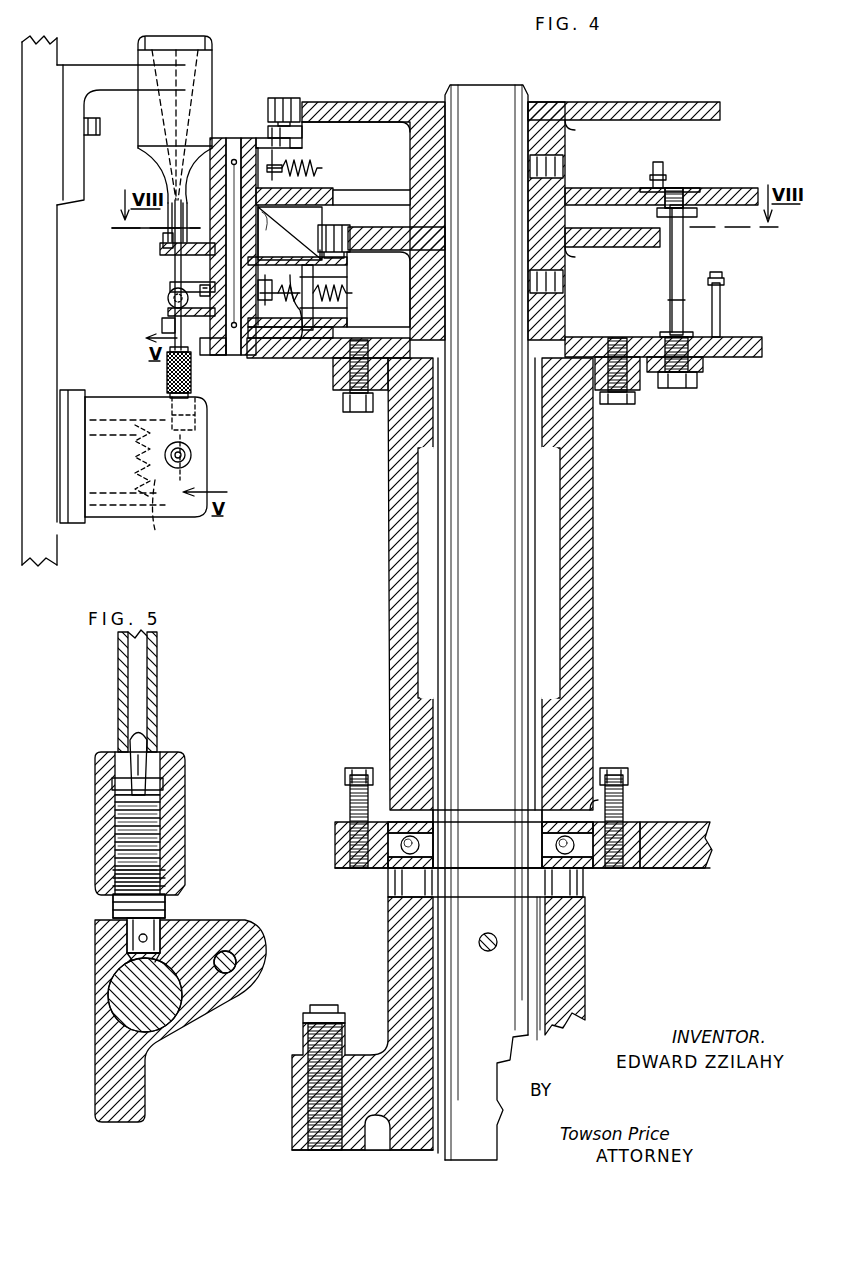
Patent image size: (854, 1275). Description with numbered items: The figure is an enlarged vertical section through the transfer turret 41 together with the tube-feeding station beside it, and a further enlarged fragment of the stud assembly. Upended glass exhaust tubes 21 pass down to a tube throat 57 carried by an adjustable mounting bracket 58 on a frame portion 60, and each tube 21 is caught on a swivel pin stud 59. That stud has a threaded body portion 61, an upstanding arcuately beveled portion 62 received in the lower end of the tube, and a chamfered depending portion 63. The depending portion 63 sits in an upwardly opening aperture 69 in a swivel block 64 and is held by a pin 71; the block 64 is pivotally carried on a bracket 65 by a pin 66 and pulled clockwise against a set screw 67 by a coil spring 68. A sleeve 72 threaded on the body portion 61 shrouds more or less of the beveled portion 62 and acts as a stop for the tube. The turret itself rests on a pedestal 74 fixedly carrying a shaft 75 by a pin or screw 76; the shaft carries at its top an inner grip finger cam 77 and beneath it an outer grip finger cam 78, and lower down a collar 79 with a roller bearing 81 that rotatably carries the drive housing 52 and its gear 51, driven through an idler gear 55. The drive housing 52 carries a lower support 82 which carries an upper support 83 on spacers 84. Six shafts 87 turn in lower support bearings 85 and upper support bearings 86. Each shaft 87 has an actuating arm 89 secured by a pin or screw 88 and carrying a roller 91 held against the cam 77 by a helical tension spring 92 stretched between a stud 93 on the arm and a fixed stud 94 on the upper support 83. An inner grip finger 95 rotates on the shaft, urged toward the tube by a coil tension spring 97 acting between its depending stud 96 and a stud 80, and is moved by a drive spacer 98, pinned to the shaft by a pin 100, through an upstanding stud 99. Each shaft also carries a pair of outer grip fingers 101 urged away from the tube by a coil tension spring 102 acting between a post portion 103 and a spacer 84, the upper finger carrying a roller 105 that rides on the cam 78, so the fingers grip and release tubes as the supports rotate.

In FIG. 4, the exhaust tube 21 is at (174, 270).
In FIG. 5, the exhaust tube 21 is at (158, 692).
In FIG. 4, the transfer turret 41 is at (360, 85).
In FIG. 4, the gear 51 is at (335, 835).
In FIG. 4, the drive housing 52 is at (595, 668).
In FIG. 4, the idler gear 55 is at (672, 822).
In FIG. 4, the tube throat 57 is at (152, 128).
In FIG. 4, the adjustable mounting bracket 58 is at (93, 72).
In FIG. 5, the swivel pin stud 59 is at (178, 775).
In FIG. 4, the frame portion 60 is at (52, 292).
In FIG. 5, the threaded body portion 61 is at (178, 892).
In FIG. 5, the arcuately beveled portion 62 is at (128, 745).
In FIG. 5, the depending portion 63 is at (172, 918).
In FIG. 4, the swivel block 64 is at (210, 409).
In FIG. 5, the swivel block 64 is at (147, 1090).
In FIG. 4, the bracket 65 is at (104, 523).
In FIG. 4, the pin 66 is at (205, 430).
In FIG. 5, the pin 66 is at (122, 995).
In FIG. 4, the set screw 67 is at (190, 462).
In FIG. 4, the coil spring 68 is at (156, 525).
In FIG. 5, the upwardly opening aperture 69 is at (130, 958).
In FIG. 5, the pin 71 is at (139, 935).
In FIG. 4, the sleeve 72 is at (165, 372).
In FIG. 5, the sleeve 72 is at (185, 850).
In FIG. 4, the pedestal 74 is at (590, 985).
In FIG. 4, the shaft 75 is at (565, 960).
In FIG. 4, the pin or screw 76 is at (483, 932).
In FIG. 4, the inner grip finger cam 77 is at (646, 102).
In FIG. 4, the outer grip finger cam 78 is at (608, 250).
In FIG. 4, the collar 79 is at (585, 890).
In FIG. 4, the stud 80 is at (720, 310).
In FIG. 4, the roller bearing 81 is at (588, 785).
In FIG. 4, the lower support 82 is at (338, 360).
In FIG. 4, the upper support 83 is at (372, 195).
In FIG. 4, the spacer 84 is at (684, 258).
In FIG. 4, the lower support bearing 85 is at (226, 356).
In FIG. 4, the upper support bearing 86 is at (268, 230).
In FIG. 4, the shaft 87 is at (232, 142).
In FIG. 4, the pin or screw 88 is at (248, 160).
In FIG. 4, the actuating arm 89 is at (305, 145).
In FIG. 4, the roller 91 is at (283, 98).
In FIG. 4, the helical tension spring 92 is at (322, 168).
In FIG. 4, the stud 93 is at (305, 164).
In FIG. 4, the fixed stud 94 is at (655, 168).
In FIG. 4, the inner grip finger 95 is at (170, 288).
In FIG. 4, the depending stud 96 is at (294, 342).
In FIG. 4, the coil tension spring 97 is at (330, 308).
In FIG. 4, the drive spacer 98 is at (168, 312).
In FIG. 4, the upstanding stud 99 is at (170, 300).
In FIG. 4, the pin 100 is at (237, 354).
In FIG. 4, the outer grip finger 101 is at (163, 240).
In FIG. 4, the coil tension spring 102 is at (352, 294).
In FIG. 4, the post portion 103 is at (320, 278).
In FIG. 4, the roller 105 is at (336, 226).